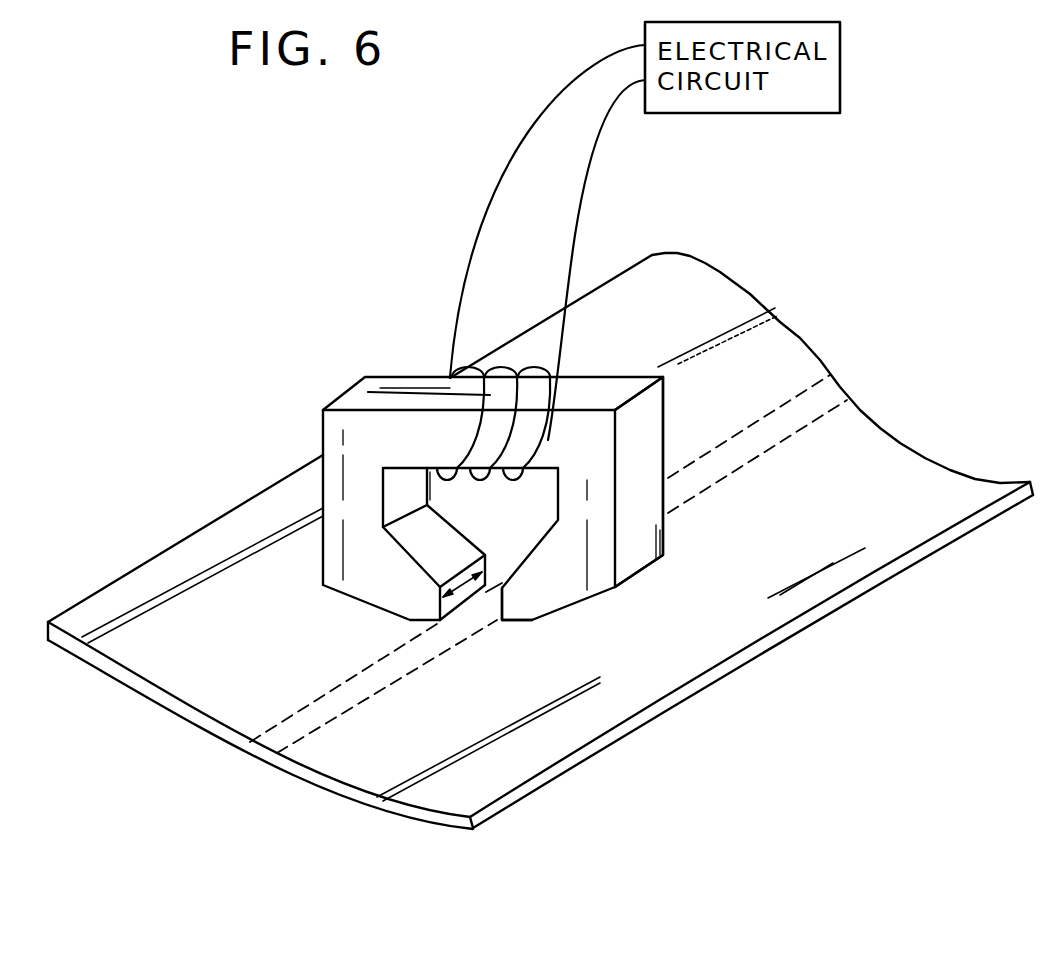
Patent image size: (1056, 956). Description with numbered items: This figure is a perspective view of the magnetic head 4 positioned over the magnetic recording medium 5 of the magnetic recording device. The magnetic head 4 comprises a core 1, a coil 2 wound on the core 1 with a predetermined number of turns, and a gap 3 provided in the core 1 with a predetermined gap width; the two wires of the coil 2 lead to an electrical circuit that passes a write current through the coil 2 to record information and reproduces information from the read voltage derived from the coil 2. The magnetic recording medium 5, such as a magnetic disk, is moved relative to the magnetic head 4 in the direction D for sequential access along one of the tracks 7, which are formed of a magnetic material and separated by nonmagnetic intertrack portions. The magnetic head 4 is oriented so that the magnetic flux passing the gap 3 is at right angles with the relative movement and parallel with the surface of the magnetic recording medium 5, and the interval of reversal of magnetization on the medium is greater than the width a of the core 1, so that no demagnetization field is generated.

The core 1 is at (658, 421).
The coil 2 is at (550, 440).
The gap 3 is at (492, 602).
The magnetic head 4 is at (318, 443).
The magnetic recording medium 5 is at (445, 773).
The track 7 is at (250, 757).
The width of the core a is at (470, 568).
The moving direction D is at (855, 647).